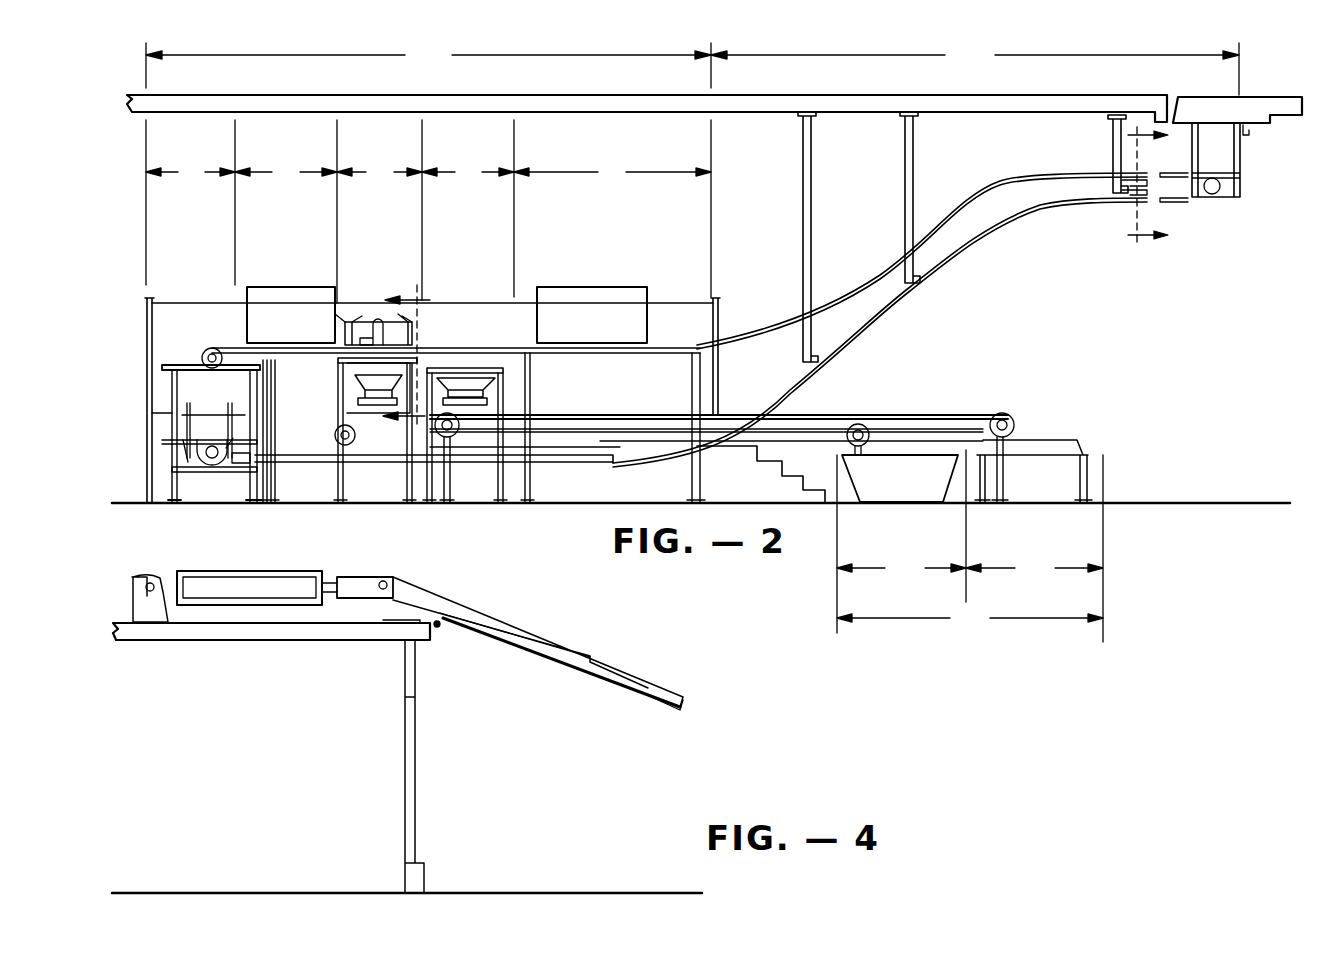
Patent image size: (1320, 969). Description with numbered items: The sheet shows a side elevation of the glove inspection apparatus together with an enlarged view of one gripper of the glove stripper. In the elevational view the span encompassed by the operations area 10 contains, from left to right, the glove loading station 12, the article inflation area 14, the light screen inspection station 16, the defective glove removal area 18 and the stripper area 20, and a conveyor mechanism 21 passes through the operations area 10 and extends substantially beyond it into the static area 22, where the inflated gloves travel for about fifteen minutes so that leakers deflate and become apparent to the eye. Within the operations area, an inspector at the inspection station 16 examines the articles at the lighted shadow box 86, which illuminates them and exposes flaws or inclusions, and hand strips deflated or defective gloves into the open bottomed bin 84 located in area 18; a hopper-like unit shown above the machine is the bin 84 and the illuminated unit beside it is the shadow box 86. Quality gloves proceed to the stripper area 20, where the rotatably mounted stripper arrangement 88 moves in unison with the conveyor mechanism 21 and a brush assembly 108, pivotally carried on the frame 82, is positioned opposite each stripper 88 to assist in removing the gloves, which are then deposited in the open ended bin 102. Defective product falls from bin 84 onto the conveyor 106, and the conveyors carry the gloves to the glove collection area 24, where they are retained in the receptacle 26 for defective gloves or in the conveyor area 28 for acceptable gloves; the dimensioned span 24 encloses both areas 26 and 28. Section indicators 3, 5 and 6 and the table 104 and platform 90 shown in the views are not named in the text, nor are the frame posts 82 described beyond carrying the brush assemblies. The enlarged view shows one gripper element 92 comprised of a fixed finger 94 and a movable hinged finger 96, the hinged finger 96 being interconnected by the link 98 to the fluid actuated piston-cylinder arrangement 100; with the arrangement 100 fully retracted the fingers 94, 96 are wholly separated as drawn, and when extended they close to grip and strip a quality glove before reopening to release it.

In FIG. 2, the operations area 10 is at (428, 65).
In FIG. 2, the static area 22 is at (975, 69).
In FIG. 2, the article inflation area 14 is at (190, 173).
In FIG. 2, the glove loading station 12 is at (286, 173).
In FIG. 2, the stripper area 20 is at (379, 173).
In FIG. 2, the defective glove removal area 18 is at (468, 173).
In FIG. 2, the light screen inspection station 16 is at (612, 173).
In FIG. 2, the receptacle 26 is at (901, 541).
In FIG. 2, the conveyor area 28 is at (1034, 541).
In FIG. 2, the glove collection area 24 is at (970, 619).
In FIG. 2, the frame 82 is at (812, 241).
In FIG. 2, the open bottomed bin 84 is at (447, 345).
In FIG. 2, the shadow box 86 is at (566, 292).
In FIG. 2, the stripper arrangement 88 is at (350, 322).
In FIG. 2, the brush assembly 108 is at (395, 340).
In FIG. 2, the open ended bin 102 is at (352, 382).
In FIG. 2, the conveyor 106 is at (488, 455).
In FIG. 2, the discharge table conveyor 104 is at (890, 415).
In FIG. 2, the conveyor mechanism 21 is at (872, 293).
In FIG. 2, the section line 3- 3 is at (400, 356).
In FIG. 2, the section line 5- 5 is at (1156, 187).
In FIG. 2, the section line 6- 6 is at (233, 460).
In FIG. 4, the gripper element 92 is at (398, 722).
In FIG. 4, the mounting platform 90 is at (317, 632).
In FIG. 4, the fixed finger 94 is at (415, 718).
In FIG. 4, the piston-cylinder arrangement 100 is at (235, 580).
In FIG. 4, the link 98 is at (430, 603).
In FIG. 4, the hinged finger 96 is at (634, 690).